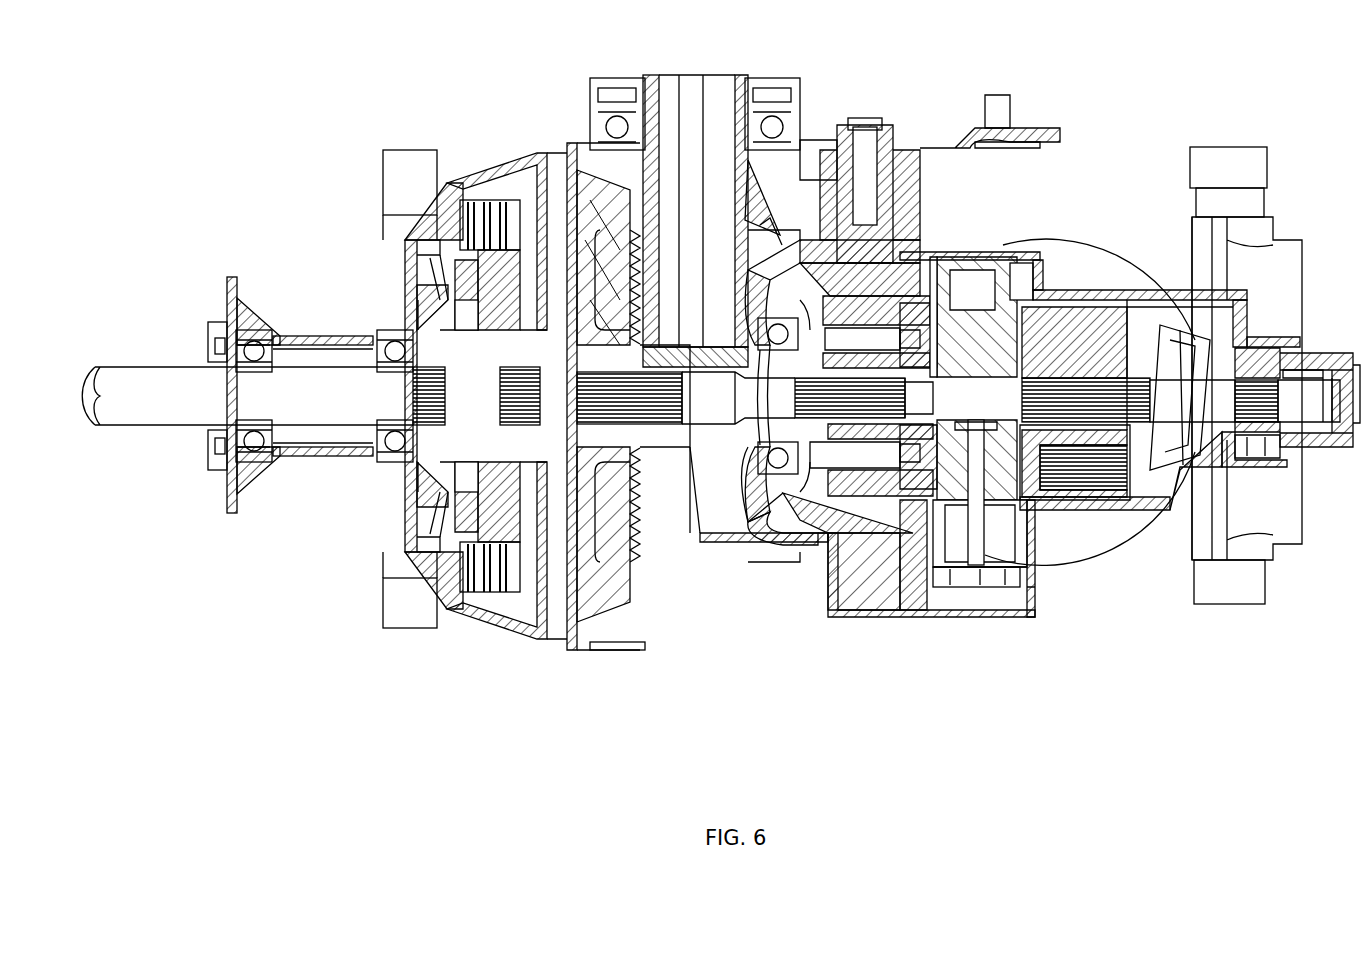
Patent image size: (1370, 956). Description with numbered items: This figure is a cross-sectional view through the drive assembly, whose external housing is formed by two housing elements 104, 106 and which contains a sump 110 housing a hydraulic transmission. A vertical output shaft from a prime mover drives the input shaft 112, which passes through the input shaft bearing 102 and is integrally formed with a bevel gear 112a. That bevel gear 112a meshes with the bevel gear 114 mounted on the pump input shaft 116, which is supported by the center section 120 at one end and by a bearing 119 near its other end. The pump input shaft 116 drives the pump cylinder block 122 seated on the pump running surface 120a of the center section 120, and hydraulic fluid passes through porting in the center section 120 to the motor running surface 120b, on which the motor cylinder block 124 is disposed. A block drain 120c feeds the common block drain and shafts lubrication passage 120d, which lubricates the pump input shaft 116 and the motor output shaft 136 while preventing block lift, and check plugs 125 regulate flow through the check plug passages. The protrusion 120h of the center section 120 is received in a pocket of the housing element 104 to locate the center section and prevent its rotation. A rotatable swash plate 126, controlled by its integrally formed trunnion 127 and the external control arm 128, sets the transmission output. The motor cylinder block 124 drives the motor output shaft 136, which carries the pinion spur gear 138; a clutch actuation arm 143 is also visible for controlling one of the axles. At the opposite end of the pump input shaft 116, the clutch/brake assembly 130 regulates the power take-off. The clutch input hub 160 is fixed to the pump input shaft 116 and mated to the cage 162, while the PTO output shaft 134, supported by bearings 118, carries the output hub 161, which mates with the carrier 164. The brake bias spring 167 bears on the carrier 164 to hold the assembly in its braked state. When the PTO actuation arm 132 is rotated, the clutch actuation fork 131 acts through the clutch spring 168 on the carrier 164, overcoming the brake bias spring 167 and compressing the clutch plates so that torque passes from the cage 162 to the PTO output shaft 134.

The input shaft bearing 102 is at (610, 125).
The housing element 104 is at (1150, 290).
The housing element 106 is at (722, 545).
The sump 110 is at (752, 527).
The input shaft 112 is at (740, 75).
The bevel gear 112a is at (775, 190).
The bevel gear 114 is at (598, 582).
The pump input shaft 116 is at (730, 408).
The bearings 118 is at (254, 343).
The bearing 119 is at (628, 450).
The center section 120 is at (965, 330).
The pump running surface 120a is at (933, 320).
The motor running surface 120b is at (1062, 320).
The block drain 120c is at (948, 560).
The common block drain and shafts lubrication passage 120d is at (975, 555).
The protrusion 120h is at (995, 282).
The pump cylinder block 122 is at (800, 325).
The motor cylinder block 124 is at (1103, 320).
The check plugs 125 is at (1005, 598).
The swash plate 126 is at (778, 495).
The trunnion 127 is at (885, 158).
The external control arm 128 is at (1055, 128).
The clutch/brake assembly 130 is at (525, 630).
The clutch actuation fork 131 is at (405, 280).
The PTO actuation arm 132 is at (410, 150).
The PTO output shaft 134 is at (178, 408).
The motor output shaft 136 is at (1212, 408).
The pinion spur gear 138 is at (1270, 447).
The clutch actuation arm 143 is at (1225, 147).
The clutch input hub 160 is at (500, 330).
The output hub 161 is at (405, 490).
The cage 162 is at (535, 170).
The carrier 164 is at (478, 200).
The brake bias spring 167 is at (478, 462).
The clutch spring 168 is at (405, 240).